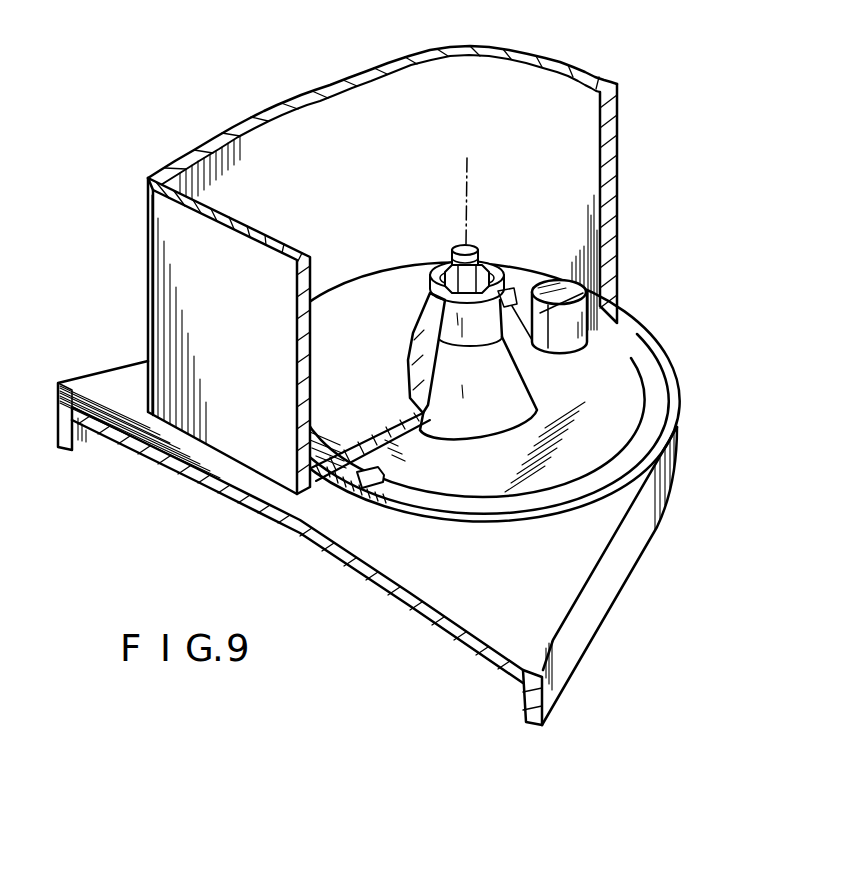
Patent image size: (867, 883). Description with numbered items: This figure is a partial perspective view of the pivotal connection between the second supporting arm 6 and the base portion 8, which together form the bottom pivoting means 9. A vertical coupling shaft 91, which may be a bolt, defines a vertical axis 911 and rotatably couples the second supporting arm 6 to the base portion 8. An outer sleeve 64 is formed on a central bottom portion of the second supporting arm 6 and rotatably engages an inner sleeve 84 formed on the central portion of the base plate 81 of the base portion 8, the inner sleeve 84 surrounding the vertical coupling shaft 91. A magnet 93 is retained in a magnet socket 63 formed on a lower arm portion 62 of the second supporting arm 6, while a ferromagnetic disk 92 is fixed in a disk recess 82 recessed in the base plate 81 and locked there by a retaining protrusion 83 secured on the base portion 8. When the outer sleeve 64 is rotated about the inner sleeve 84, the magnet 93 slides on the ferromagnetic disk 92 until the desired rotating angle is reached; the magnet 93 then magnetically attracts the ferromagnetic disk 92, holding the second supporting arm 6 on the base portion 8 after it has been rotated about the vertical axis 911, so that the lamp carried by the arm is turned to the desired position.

The second supporting arm 6 is at (618, 117).
The lower arm portion 62 is at (594, 222).
The magnet socket 63 is at (562, 280).
The outer sleeve 64 is at (408, 328).
The base portion 8 is at (460, 646).
The base plate 81 is at (557, 604).
The disk recess 82 is at (640, 490).
The retaining protrusion 83 is at (383, 477).
The inner sleeve 84 is at (470, 420).
The bottom pivoting means 9 is at (600, 384).
The vertical coupling shaft 91 is at (482, 262).
The vertical axis 911 is at (468, 160).
The ferromagnetic disk 92 is at (618, 425).
The magnet 93 is at (640, 344).